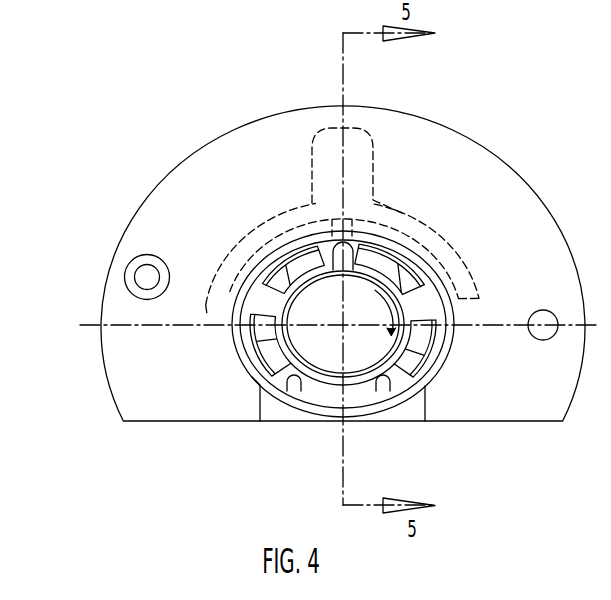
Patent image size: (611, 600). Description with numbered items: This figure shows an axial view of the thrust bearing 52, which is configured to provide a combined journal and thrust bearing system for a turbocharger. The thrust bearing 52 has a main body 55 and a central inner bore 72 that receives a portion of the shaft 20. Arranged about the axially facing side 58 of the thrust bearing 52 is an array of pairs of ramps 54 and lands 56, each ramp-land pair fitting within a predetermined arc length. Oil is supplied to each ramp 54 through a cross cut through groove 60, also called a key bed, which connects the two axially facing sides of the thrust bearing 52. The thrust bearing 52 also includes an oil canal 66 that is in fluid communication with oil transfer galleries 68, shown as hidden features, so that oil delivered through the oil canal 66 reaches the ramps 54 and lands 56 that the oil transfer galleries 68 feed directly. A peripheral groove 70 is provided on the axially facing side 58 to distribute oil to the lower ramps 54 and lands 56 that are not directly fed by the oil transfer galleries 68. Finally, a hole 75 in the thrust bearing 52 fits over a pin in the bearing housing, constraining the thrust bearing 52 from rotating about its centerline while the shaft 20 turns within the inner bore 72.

The shaft 20 is at (313, 358).
The thrust bearing 52 is at (250, 178).
The ramp 54 is at (282, 272).
The main body 55 is at (326, 407).
The land 56 is at (318, 255).
The axially facing side 58 is at (368, 403).
The cross cut through groove 60 is at (388, 382).
The oil canal 66 is at (390, 213).
The oil transfer galleries 68 is at (478, 294).
The peripheral groove 70 is at (240, 343).
The inner bore 72 is at (290, 370).
The hole 75 is at (147, 277).